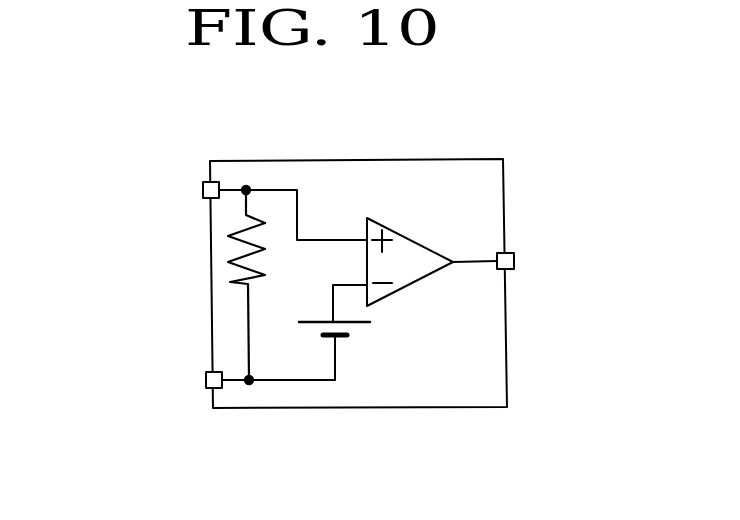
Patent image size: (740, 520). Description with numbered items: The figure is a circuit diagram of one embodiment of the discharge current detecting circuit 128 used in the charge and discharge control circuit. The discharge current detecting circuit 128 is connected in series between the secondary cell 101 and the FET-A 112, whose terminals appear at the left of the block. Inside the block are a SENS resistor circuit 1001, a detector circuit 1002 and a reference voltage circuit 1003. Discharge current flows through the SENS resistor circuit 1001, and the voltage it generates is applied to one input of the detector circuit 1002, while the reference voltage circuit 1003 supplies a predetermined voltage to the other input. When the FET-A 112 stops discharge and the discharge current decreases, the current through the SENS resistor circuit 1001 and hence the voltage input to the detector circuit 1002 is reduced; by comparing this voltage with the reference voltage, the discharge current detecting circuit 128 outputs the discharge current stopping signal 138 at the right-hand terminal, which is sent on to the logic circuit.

The FET-A 112 is at (202, 190).
The secondary cell 101 is at (205, 380).
The discharge current stopping signal 138 is at (514, 261).
The discharge current detecting circuit 128 is at (507, 330).
The SENS resistor circuit 1001 is at (267, 218).
The detector circuit 1002 is at (410, 230).
The reference voltage circuit 1003 is at (343, 343).